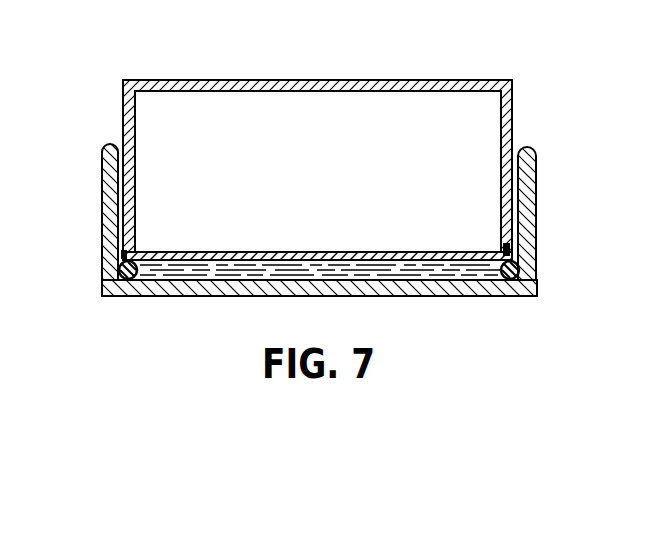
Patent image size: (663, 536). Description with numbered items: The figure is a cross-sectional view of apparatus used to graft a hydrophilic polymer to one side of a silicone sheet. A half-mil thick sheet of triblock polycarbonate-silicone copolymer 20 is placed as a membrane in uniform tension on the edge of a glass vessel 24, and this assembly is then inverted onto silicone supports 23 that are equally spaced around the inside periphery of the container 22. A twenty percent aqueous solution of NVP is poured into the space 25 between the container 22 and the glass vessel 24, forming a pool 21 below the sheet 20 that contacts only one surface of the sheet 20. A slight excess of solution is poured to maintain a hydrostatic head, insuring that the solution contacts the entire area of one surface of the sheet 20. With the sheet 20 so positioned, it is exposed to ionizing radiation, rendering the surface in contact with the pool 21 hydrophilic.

The sheet of triblock polycarbonate-silicone copolymer 20 is at (318, 252).
The pool 21 is at (209, 278).
The container 22 is at (528, 265).
The silicone supports 23 is at (121, 270).
The glass vessel 24 is at (424, 88).
The space 25 is at (515, 157).